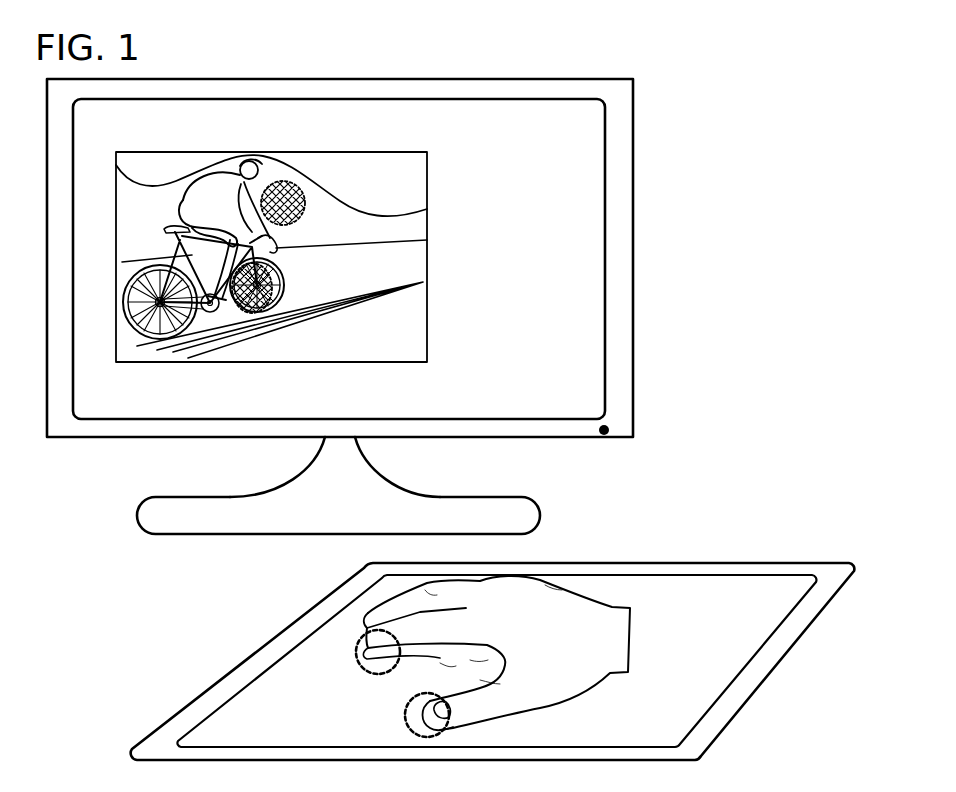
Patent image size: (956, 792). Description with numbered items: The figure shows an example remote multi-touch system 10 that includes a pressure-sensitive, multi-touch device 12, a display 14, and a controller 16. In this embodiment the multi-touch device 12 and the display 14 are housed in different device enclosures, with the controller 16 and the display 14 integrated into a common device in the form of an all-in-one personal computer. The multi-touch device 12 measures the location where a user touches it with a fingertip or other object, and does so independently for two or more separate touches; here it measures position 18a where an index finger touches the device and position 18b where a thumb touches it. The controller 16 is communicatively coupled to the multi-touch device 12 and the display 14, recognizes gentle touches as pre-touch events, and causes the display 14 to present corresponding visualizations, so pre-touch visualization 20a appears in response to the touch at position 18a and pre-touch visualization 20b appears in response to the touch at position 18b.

The remote multi-touch system 10 is at (630, 54).
The pressure-sensitive, multi-touch device 12 is at (819, 567).
The display 14 is at (621, 122).
The controller 16 is at (383, 492).
The position 18a is at (362, 670).
The position 18b is at (414, 730).
The pre-touch visualization 20a is at (287, 192).
The pre-touch visualization 20b is at (270, 282).